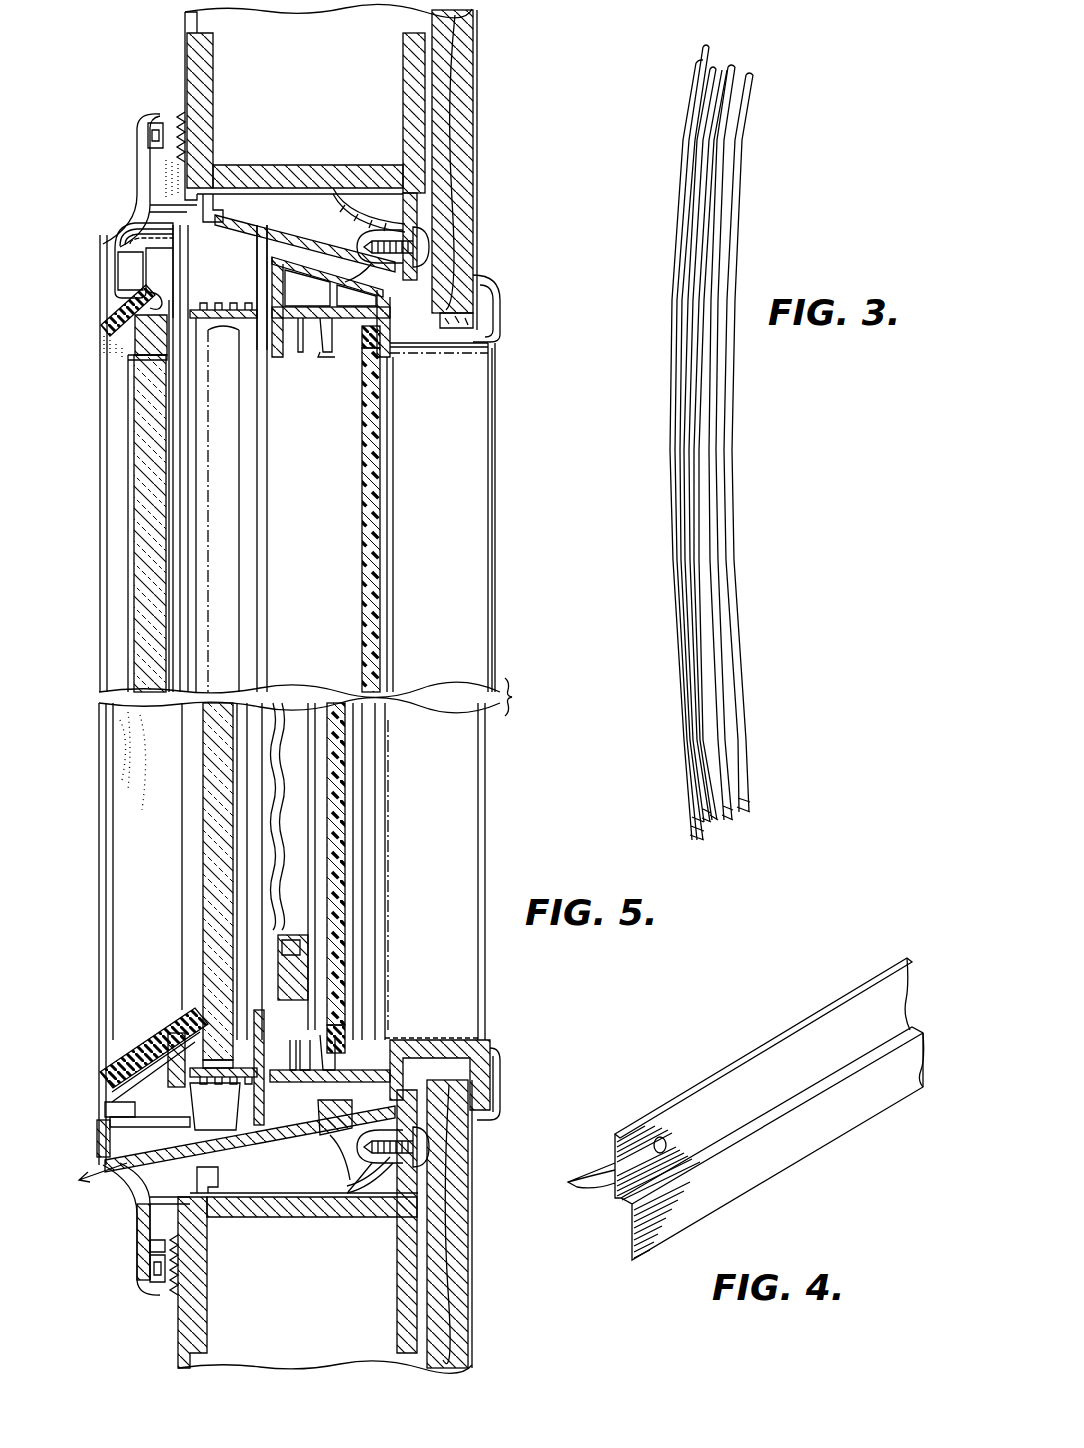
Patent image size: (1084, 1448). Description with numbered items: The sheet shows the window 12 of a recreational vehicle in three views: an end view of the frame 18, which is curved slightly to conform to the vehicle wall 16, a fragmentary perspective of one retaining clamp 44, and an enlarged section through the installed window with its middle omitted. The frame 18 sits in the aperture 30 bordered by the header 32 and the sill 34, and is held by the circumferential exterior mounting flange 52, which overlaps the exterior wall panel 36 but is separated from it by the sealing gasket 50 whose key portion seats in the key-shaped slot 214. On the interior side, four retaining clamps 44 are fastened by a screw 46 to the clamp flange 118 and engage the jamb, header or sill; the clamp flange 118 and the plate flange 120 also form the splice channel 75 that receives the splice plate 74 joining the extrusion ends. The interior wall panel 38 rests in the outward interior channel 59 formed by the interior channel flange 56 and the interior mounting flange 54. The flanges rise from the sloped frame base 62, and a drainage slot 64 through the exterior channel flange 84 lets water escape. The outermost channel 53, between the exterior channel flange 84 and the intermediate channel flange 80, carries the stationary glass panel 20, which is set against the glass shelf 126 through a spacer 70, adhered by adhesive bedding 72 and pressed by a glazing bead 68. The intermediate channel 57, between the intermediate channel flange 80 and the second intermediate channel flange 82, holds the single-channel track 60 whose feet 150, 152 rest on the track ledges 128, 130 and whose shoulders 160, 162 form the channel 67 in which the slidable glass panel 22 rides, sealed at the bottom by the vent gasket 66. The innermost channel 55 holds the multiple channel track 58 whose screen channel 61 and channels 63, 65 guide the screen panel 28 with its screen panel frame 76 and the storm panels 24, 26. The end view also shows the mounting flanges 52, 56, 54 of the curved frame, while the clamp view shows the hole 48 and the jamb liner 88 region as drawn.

In FIG. 5, the window 12 is at (84, 856).
In FIG. 5, the vehicle wall 16 is at (176, 27).
In FIG. 5, the frame 18 is at (115, 210).
In FIG. 3, the frame 18 is at (734, 427).
In FIG. 5, the stationary glass panel 20 is at (140, 545).
In FIG. 5, the slidable glass panel 22 is at (236, 620).
In FIG. 5, the storm panel 24 is at (378, 578).
In FIG. 5, the storm panel 26 is at (338, 852).
In FIG. 5, the slidable screen panel 28 is at (275, 912).
In FIG. 5, the aperture 30 is at (370, 200).
In FIG. 5, the header 32 is at (306, 165).
In FIG. 5, the sill 34 is at (292, 1218).
In FIG. 5, the exterior wall panel 36 is at (184, 60).
In FIG. 5, the interior wall panel 38 is at (460, 52).
In FIG. 5, the retaining clamp 44 is at (410, 148).
In FIG. 4, the retaining clamp 44 is at (828, 1012).
In FIG. 5, the screw 46 is at (428, 240).
In FIG. 4, the hole 48 is at (660, 1137).
In FIG. 5, the sealing gasket 50 is at (170, 102).
In FIG. 5, the exterior mounting flange 52 is at (138, 135).
In FIG. 3, the exterior mounting flange 52 is at (704, 46).
In FIG. 5, the outermost channel 53 is at (142, 235).
In FIG. 5, the interior mounting flange 54 is at (498, 296).
In FIG. 3, the interior mounting flange 54 is at (755, 88).
In FIG. 5, the innermost channel 55 is at (312, 268).
In FIG. 5, the interior channel flange 56 is at (392, 300).
In FIG. 3, the interior channel flange 56 is at (737, 65).
In FIG. 5, the intermediate channel 57 is at (232, 268).
In FIG. 5, the multiple channel track 58 is at (318, 1120).
In FIG. 5, the outward interior channel 59 is at (455, 325).
In FIG. 5, the single-channel track 60 is at (233, 298).
In FIG. 5, the screen channel 61 is at (298, 330).
In FIG. 5, the frame base 62 is at (340, 1160).
In FIG. 5, the channel 63 is at (385, 332).
In FIG. 5, the drainage slot 64 is at (130, 1167).
In FIG. 5, the channel 65 is at (326, 335).
In FIG. 5, the vent gasket 66 is at (118, 1045).
In FIG. 5, the channel 67 is at (214, 345).
In FIG. 5, the glazing bead 68 is at (118, 310).
In FIG. 5, the spacer 70 is at (120, 335).
In FIG. 5, the adhesive bedding 72 is at (140, 357).
In FIG. 5, the splice plate 74 is at (292, 262).
In FIG. 5, the splice channel 75 is at (268, 225).
In FIG. 5, the screen panel frame 76 is at (305, 970).
In FIG. 5, the intermediate channel flange 80 is at (140, 372).
In FIG. 5, the second intermediate channel flange 82 is at (262, 350).
In FIG. 5, the exterior channel flange 84 is at (118, 275).
In FIG. 5, the jamb liner 88 is at (128, 740).
In FIG. 5, the clamp flange 118 is at (370, 270).
In FIG. 5, the plate flange 120 is at (212, 210).
In FIG. 5, the glass shelf 126 is at (118, 258).
In FIG. 5, the track ledge 128 is at (190, 1122).
In FIG. 5, the track ledge 130 is at (248, 1120).
In FIG. 5, the foot 150 is at (105, 1108).
In FIG. 5, the foot 152 is at (242, 1100).
In FIG. 5, the shoulder 160 is at (262, 1045).
In FIG. 5, the shoulder 162 is at (125, 1032).
In FIG. 5, the key-shaped slot 214 is at (148, 1255).